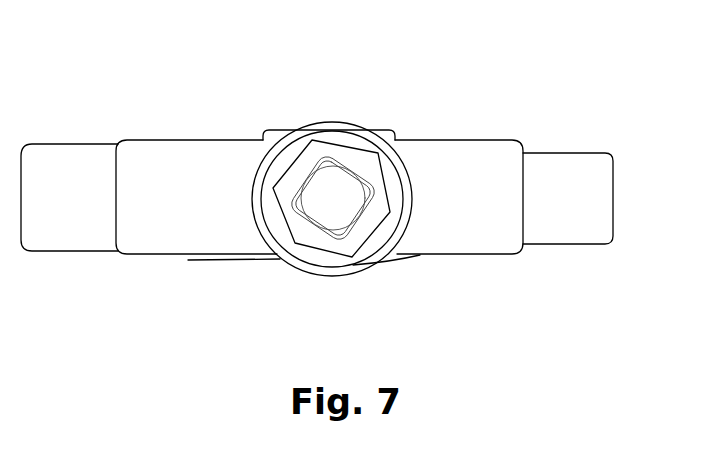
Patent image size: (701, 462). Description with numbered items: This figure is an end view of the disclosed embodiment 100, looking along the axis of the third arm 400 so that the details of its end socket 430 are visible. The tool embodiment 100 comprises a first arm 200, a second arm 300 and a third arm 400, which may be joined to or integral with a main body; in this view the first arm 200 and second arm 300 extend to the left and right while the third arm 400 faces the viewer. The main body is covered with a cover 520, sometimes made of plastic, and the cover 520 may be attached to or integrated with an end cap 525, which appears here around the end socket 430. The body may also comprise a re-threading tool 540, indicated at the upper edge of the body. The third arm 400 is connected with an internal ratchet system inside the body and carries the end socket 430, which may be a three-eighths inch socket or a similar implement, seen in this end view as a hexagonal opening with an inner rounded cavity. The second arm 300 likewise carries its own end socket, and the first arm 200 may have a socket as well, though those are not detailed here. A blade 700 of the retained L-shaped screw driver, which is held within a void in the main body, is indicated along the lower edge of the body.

The embodiment 100 is at (325, 103).
The first arm 200 is at (70, 180).
The second arm 300 is at (590, 173).
The third arm 400 is at (408, 269).
The end socket 430 is at (323, 222).
The cover 520 is at (198, 177).
The end cap 525 is at (385, 172).
The re-threading tool 540 is at (372, 130).
The blade 700 is at (188, 260).